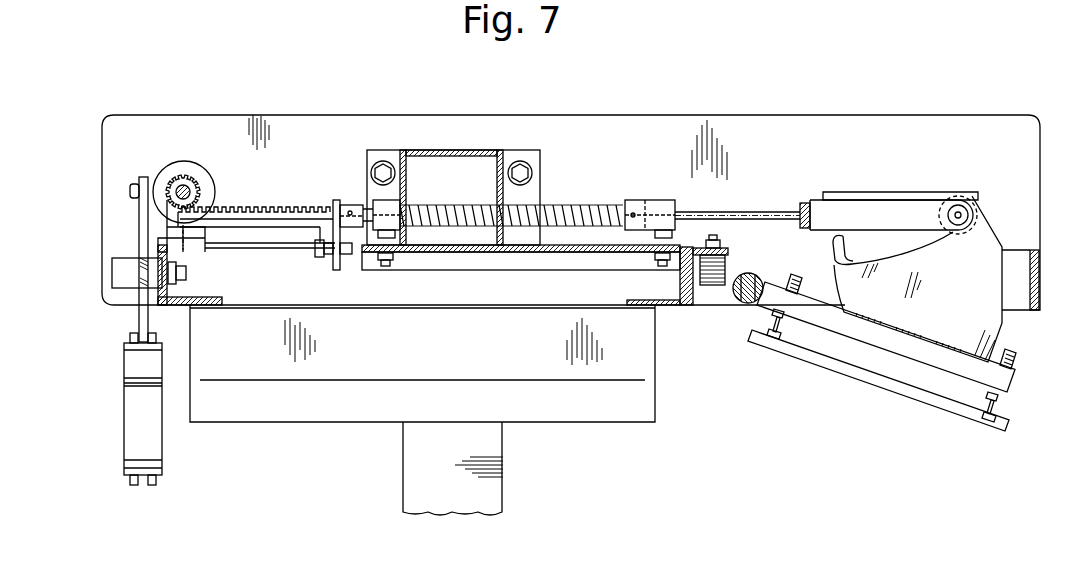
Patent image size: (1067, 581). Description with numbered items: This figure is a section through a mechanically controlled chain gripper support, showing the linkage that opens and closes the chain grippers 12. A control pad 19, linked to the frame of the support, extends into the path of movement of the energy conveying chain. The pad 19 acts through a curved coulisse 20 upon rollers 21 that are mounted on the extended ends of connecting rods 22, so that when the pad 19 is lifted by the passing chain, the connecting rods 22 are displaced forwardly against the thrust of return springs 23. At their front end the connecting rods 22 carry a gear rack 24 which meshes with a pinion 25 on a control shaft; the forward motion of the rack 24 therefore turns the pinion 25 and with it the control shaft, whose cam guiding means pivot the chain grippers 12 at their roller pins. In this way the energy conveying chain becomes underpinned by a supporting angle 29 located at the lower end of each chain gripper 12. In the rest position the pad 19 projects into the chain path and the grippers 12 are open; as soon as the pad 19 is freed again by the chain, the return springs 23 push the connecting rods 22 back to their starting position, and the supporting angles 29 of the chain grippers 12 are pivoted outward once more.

The chain gripper 12 is at (138, 318).
The control pad 19 is at (923, 395).
The curved coulisse 20 is at (940, 248).
The roller 21 is at (967, 215).
The connecting rod 22 is at (758, 217).
The return spring 23 is at (573, 208).
The gear rack 24 is at (287, 207).
The pinion 25 is at (192, 190).
The supporting angle 29 is at (132, 425).